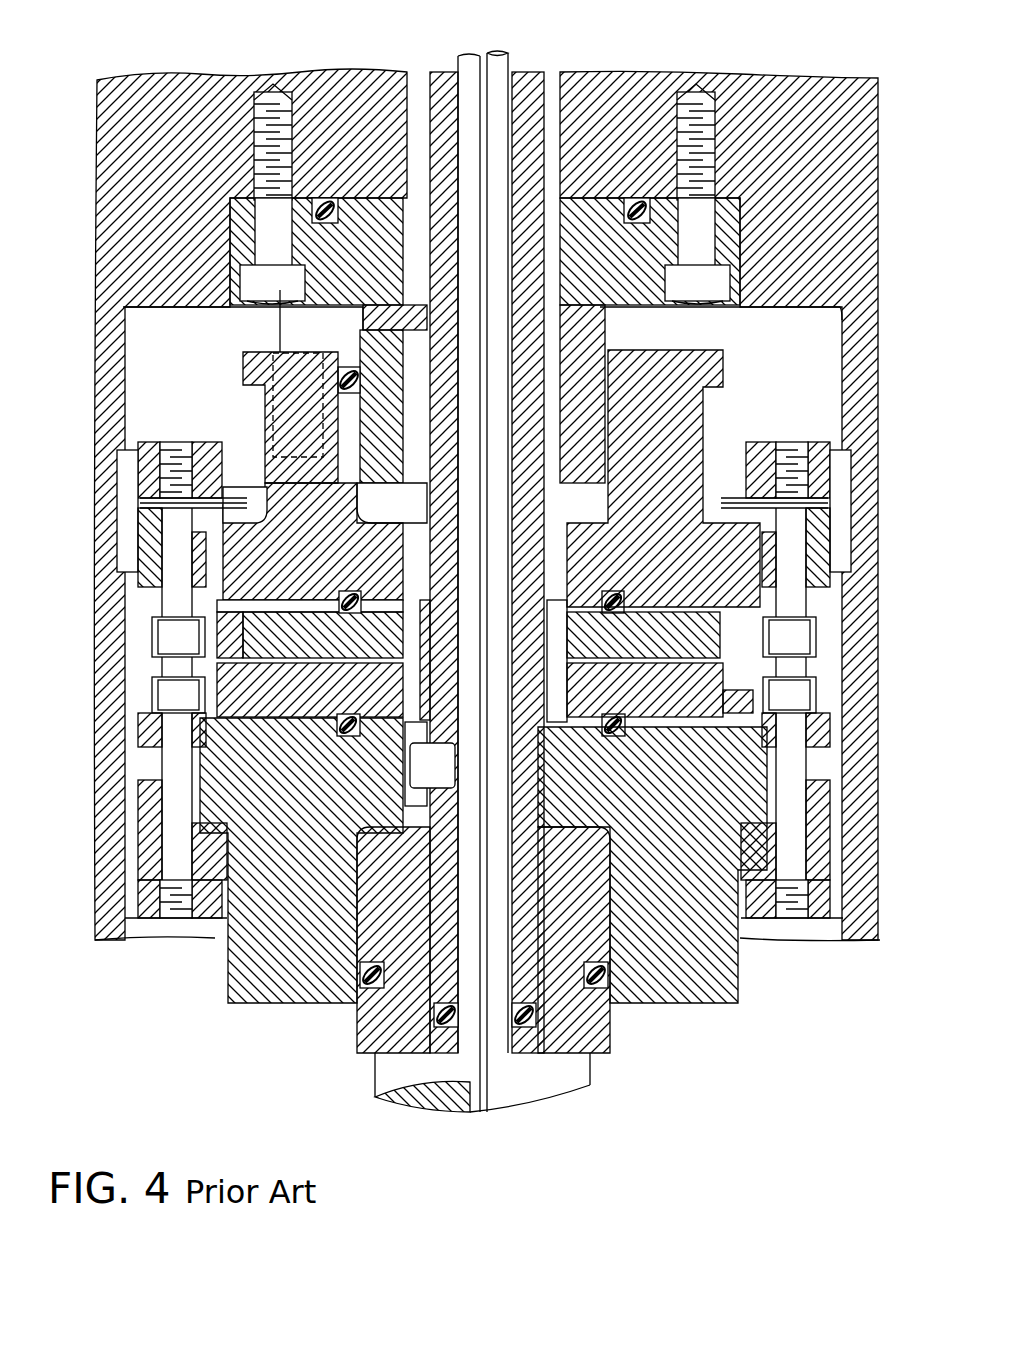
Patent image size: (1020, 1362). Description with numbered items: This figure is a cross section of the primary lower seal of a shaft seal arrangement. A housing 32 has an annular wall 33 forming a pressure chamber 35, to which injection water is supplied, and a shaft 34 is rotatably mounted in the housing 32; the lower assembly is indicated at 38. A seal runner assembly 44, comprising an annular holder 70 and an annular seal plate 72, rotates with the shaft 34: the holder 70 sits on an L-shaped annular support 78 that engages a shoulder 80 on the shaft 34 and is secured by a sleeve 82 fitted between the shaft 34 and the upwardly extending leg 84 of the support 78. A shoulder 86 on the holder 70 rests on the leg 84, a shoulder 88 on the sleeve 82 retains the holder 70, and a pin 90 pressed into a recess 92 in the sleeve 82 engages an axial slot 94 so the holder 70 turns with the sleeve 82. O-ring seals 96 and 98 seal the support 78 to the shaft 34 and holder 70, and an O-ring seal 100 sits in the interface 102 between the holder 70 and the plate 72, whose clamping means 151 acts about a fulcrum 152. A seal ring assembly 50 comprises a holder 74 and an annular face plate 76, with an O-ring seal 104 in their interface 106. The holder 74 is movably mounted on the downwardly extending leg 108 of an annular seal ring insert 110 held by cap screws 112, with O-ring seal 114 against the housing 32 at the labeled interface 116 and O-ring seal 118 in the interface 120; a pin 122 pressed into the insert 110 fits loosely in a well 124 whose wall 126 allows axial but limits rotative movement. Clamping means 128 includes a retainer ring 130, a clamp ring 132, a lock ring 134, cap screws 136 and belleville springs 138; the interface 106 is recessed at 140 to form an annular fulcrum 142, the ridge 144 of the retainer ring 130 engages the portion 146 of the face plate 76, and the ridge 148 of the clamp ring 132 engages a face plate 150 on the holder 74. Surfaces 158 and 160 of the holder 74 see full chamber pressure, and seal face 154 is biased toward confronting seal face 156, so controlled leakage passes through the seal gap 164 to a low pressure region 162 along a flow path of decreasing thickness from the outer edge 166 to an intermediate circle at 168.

The housing 32 is at (250, 72).
The annular wall 33 is at (135, 307).
The shaft 34 is at (512, 68).
The pressure chamber 35 is at (189, 353).
The lower body assembly 38 is at (752, 978).
The seal runner assembly 44 is at (313, 866).
The seal ring assembly 50 is at (349, 540).
The annular holder 70 is at (235, 1005).
The annular seal plate 72 is at (312, 753).
The holder 74 is at (262, 403).
The annular face plate 76 is at (300, 608).
The annular support 78 is at (365, 1058).
The shoulder 80 is at (372, 1094).
The sleeve 82 is at (538, 786).
The upwardly extending leg 84 is at (360, 909).
The shoulder 86 is at (357, 826).
The shoulder 88 is at (440, 723).
The pin 90 is at (450, 778).
The recess 92 is at (452, 753).
The axial slot 94 is at (428, 800).
The O-ring seal 96 is at (368, 1030).
The O-ring seal 98 is at (355, 976).
The O-ring seal 100 is at (368, 762).
The interface 102 is at (347, 740).
The O-ring seal 104 is at (413, 601).
The interface 106 is at (332, 598).
The downwardly extending leg 108 is at (368, 500).
The annular seal ring insert 110 is at (240, 240).
The cap screws 112 is at (238, 275).
The O-ring seal 114 is at (322, 197).
The bolt 116 is at (362, 197).
The O-ring seal 118 is at (373, 372).
The interface 120 is at (372, 396).
The pin 122 is at (335, 282).
The well 124 is at (272, 433).
The wall of the well 126 is at (340, 470).
The clamping means 128 is at (125, 472).
The retainer ring 130 is at (175, 637).
The clamp ring 132 is at (150, 520).
The lock ring 134 is at (132, 445).
The cap screws 136 is at (178, 440).
The belleville springs 138 is at (225, 508).
The recess 140 is at (160, 583).
The annular fulcrum 142 is at (160, 602).
The ridge 144 is at (180, 690).
The portion 146 is at (180, 660).
The ridge 148 is at (145, 502).
The face plate 150 is at (222, 568).
The clamping means 151 is at (158, 778).
The fulcrum 152 is at (275, 776).
The seal face 154 is at (325, 662).
The seal face 156 is at (335, 680).
The surface 158 is at (240, 510).
The surface 160 is at (376, 318).
The annular low pressure region 162 is at (415, 635).
The seal gap 164 is at (245, 681).
The high pressure edge 166 is at (245, 655).
The intermediate concentric circle 168 is at (415, 666).